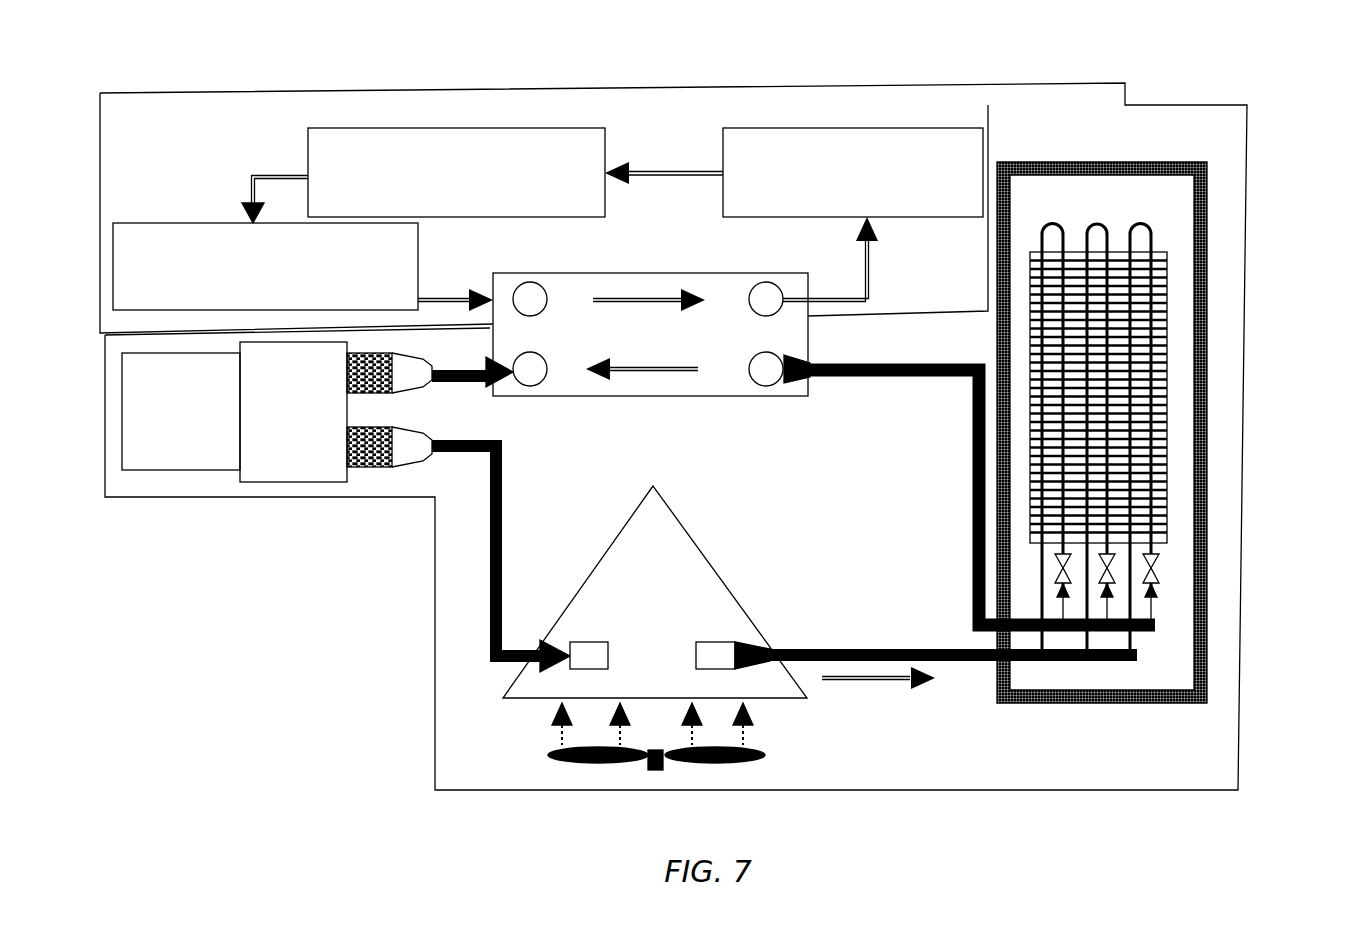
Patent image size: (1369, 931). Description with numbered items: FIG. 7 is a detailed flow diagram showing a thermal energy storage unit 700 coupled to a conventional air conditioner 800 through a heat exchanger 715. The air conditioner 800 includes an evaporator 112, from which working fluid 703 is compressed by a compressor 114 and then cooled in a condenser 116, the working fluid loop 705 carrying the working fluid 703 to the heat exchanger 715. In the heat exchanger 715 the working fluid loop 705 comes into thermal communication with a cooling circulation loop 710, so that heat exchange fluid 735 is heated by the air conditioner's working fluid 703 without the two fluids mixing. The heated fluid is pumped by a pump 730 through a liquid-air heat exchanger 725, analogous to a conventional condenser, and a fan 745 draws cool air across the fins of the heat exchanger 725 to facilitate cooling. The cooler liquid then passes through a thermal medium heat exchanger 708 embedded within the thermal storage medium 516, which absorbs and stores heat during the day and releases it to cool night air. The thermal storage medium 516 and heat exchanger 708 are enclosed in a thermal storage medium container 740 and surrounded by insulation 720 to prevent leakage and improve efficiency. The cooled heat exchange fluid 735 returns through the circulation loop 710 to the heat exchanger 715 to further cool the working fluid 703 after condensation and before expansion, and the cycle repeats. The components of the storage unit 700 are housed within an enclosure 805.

The evaporator 112 is at (794, 172).
The compressor 114 is at (456, 172).
The condenser 116 is at (303, 267).
The thermal storage medium 516 is at (1164, 647).
The thermal energy storage unit 700 is at (455, 580).
The working fluid 703 is at (278, 162).
The working fluid loop 705 is at (236, 181).
The thermal medium heat exchanger 708 is at (1165, 233).
The cooling circulation loop 710 is at (963, 514).
The heat exchanger 715 is at (685, 306).
The insulation 720 is at (1220, 176).
The liquid-air heat exchanger 725 is at (820, 592).
The pump 730 is at (346, 507).
The heat exchange fluid 735 is at (961, 461).
The thermal storage medium container 740 is at (1210, 455).
The fan 745 is at (778, 760).
The air conditioner 800 is at (647, 138).
The enclosure 805 is at (1168, 790).